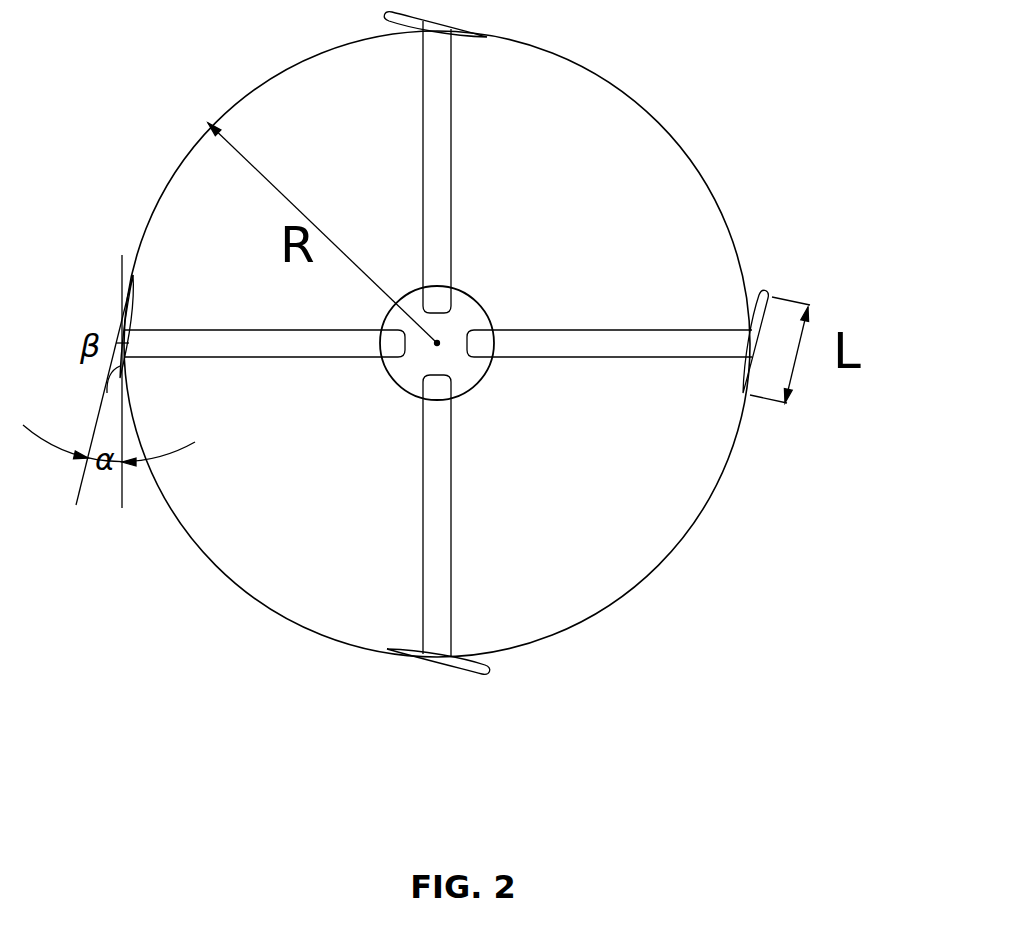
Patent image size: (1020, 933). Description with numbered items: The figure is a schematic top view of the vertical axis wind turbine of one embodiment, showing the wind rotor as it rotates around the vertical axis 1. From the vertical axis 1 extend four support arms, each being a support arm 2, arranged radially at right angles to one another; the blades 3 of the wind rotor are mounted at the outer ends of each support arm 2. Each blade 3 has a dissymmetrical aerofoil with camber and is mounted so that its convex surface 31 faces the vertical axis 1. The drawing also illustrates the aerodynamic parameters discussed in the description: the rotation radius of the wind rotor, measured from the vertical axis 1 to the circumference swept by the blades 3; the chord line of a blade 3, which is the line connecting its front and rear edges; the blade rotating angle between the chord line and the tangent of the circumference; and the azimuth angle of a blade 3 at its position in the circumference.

The vertical axis 1 is at (437, 343).
The support arm 2 is at (635, 330).
The blade 3 is at (444, 391).
The convex surface 31 is at (458, 655).